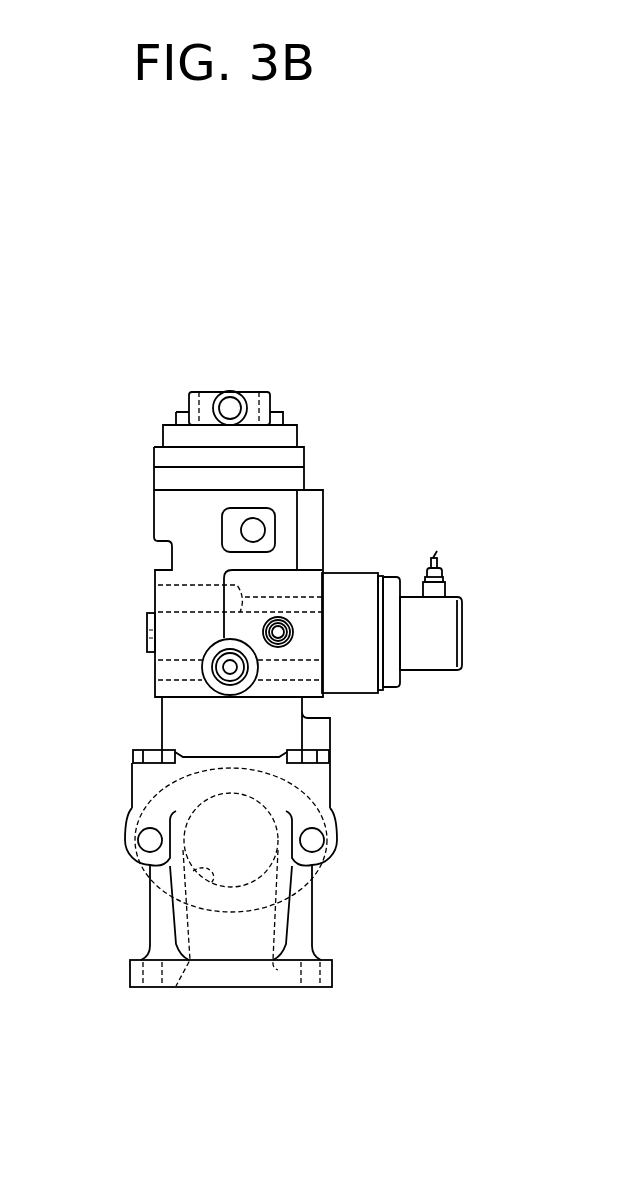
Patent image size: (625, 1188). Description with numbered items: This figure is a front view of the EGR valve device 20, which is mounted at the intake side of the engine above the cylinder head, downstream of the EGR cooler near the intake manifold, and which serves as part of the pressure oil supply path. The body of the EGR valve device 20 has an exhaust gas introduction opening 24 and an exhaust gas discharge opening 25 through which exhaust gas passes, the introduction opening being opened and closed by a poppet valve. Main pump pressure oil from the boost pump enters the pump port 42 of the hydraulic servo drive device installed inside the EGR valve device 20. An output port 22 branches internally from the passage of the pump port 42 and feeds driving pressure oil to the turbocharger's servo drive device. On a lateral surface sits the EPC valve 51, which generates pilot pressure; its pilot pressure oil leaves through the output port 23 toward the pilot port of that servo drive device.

The EGR valve device 20 is at (132, 403).
The output port 22 is at (160, 680).
The output port 23 is at (160, 612).
The exhaust gas introduction opening 24 is at (275, 967).
The exhaust gas discharge opening 25 is at (193, 871).
The pump port 42 is at (222, 682).
The EPC valve 51 is at (347, 587).